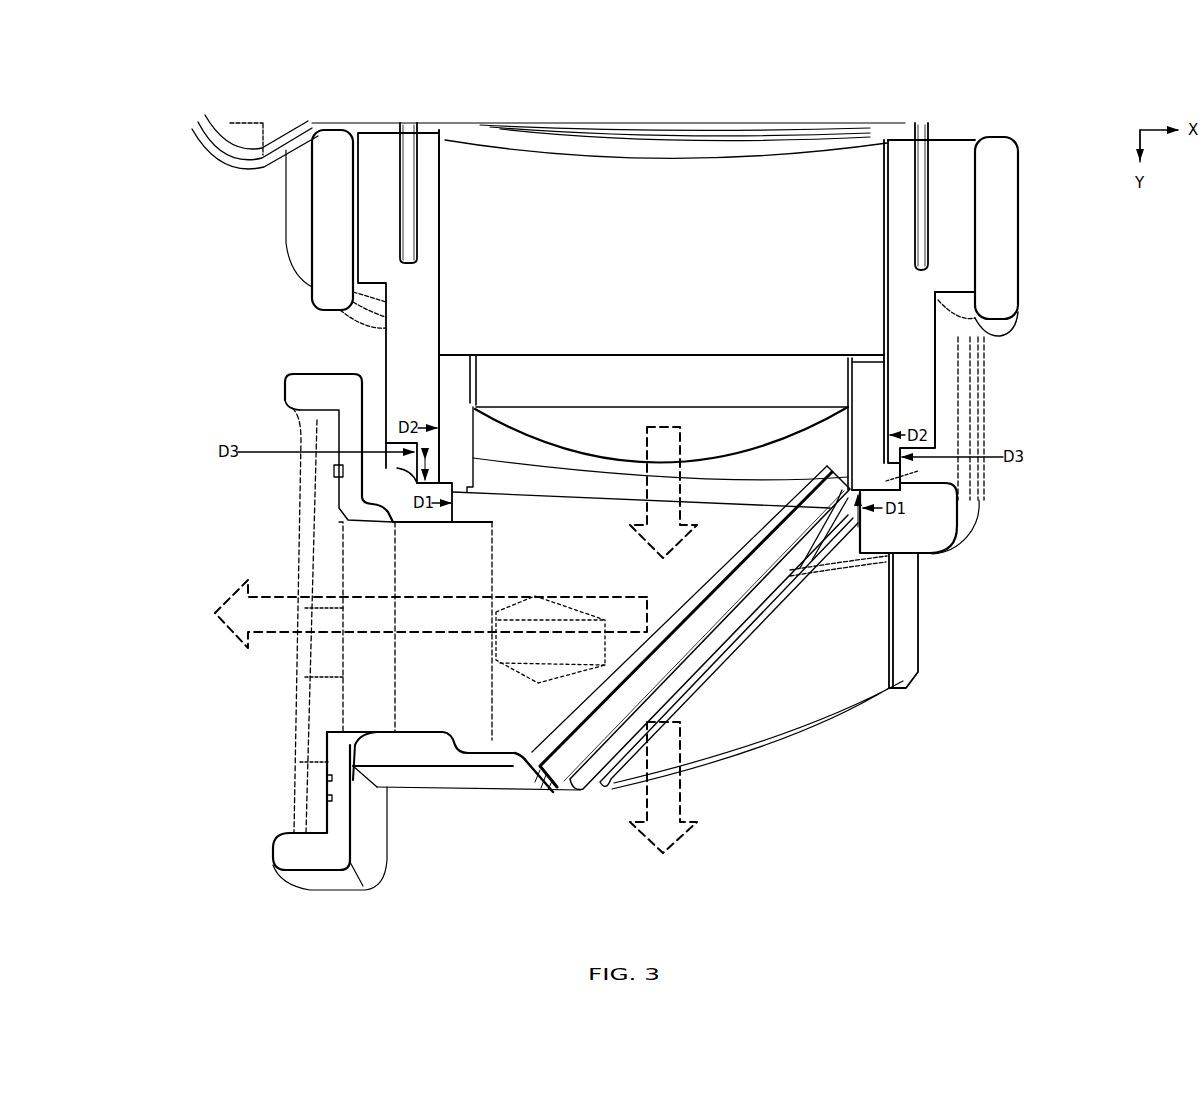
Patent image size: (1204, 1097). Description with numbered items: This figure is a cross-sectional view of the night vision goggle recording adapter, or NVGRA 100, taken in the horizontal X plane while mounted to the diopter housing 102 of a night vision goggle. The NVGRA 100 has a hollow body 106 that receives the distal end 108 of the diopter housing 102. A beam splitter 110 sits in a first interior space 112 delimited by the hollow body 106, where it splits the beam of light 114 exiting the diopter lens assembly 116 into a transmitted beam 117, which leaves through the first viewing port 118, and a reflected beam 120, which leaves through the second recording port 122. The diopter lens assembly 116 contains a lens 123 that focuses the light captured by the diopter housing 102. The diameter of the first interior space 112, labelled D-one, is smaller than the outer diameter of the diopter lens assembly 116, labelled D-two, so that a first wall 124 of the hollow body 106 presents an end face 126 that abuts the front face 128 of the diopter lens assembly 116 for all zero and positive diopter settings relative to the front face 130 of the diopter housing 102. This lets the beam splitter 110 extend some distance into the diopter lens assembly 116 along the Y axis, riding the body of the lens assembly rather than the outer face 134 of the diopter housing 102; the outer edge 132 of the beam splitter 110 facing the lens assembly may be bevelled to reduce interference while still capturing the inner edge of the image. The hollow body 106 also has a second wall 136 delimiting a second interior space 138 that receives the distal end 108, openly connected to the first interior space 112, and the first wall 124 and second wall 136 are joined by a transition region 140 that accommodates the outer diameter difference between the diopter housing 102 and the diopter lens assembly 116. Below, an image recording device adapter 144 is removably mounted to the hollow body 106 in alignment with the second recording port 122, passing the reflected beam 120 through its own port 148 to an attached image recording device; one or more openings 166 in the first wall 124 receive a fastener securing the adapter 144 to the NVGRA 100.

The NVGRA 100 is at (988, 577).
The diopter housing 102 is at (400, 348).
The hollow body 106 is at (985, 362).
The distal end 108 is at (380, 367).
The beam splitter 110 is at (717, 613).
The first interior space 112 is at (540, 578).
The beam of light 114 is at (645, 492).
The diopter lens assembly 116 is at (870, 422).
The transmitted beam 117 is at (683, 790).
The first (viewing) port 118 is at (800, 742).
The reflected beam 120 is at (268, 635).
The second (recording) port 122 is at (437, 692).
The lens 123 is at (548, 427).
The first wall 124 is at (940, 517).
The end face 126 is at (876, 483).
The front face 128 is at (834, 507).
The front face of the diopter housing 130 is at (410, 483).
The outer edge 132 is at (836, 504).
The outer face 134 is at (942, 379).
The second wall 136 is at (1006, 252).
The second interior space 138 is at (496, 243).
The transition region 140 is at (940, 487).
The image recording device adapter 144 is at (327, 883).
The port 148 is at (362, 548).
The openings 166 is at (574, 645).